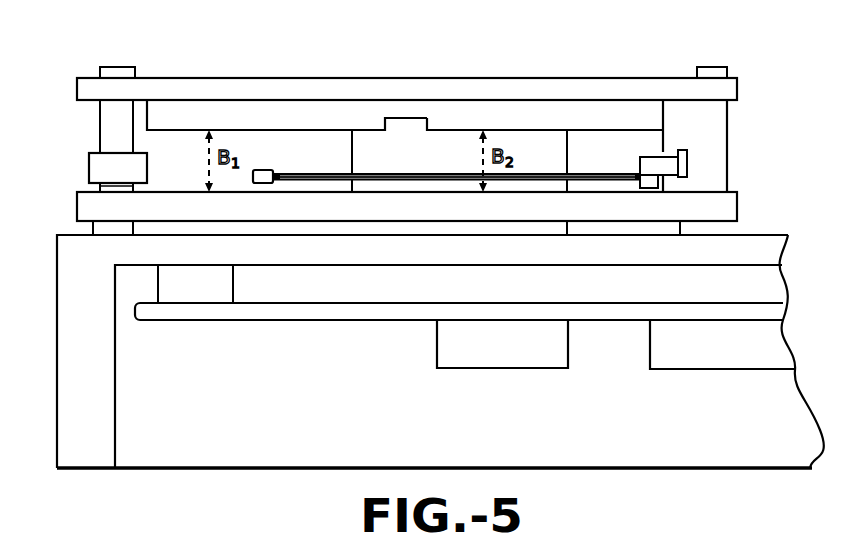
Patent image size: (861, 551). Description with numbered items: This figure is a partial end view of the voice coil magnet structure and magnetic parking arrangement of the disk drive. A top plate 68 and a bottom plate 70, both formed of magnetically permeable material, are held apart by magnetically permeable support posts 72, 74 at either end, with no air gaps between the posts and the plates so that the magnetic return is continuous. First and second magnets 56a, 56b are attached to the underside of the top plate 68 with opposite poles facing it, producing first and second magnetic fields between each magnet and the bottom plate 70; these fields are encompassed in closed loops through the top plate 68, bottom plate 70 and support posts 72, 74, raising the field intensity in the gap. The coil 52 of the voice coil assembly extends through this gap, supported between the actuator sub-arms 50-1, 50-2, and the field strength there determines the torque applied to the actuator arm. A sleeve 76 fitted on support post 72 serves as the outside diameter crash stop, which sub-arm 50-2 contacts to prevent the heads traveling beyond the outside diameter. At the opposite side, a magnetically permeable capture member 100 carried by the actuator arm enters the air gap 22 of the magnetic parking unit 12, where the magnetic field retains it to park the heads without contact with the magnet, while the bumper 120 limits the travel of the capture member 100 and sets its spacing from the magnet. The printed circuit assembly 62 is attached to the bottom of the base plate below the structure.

The magnetic parking unit 12 is at (688, 183).
The air gap 22 is at (666, 190).
The actuator sub-arm 50-1 is at (635, 170).
The actuator sub-arm 50-2 is at (263, 170).
The coil 52 is at (398, 173).
The first magnet 56a is at (265, 113).
The second magnet 56b is at (470, 118).
The printed circuit assembly 62 is at (307, 313).
The top plate 68 is at (560, 90).
The bottom plate 70 is at (88, 210).
The support post 72 is at (101, 190).
The support post 74 is at (724, 182).
The sleeve 76 is at (147, 163).
The capture member 100 is at (668, 157).
The bumper 120 is at (690, 153).